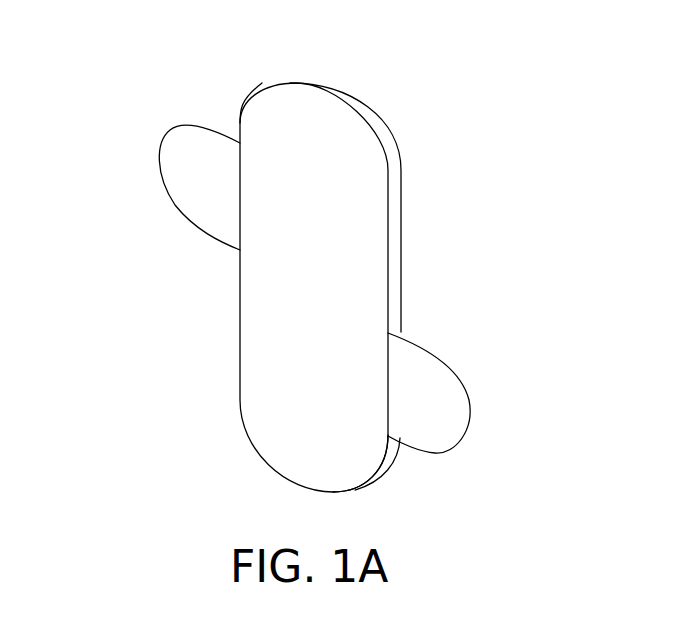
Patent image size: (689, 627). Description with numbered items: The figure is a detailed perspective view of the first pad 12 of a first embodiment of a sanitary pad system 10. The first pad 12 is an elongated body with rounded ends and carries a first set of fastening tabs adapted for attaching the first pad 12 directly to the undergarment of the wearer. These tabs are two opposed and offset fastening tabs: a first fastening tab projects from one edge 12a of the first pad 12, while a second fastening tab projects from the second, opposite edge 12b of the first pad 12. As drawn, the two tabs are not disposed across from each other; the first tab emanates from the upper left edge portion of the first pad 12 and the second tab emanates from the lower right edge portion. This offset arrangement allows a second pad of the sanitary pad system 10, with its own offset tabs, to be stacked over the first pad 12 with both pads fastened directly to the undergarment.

The sanitary pad system 10 is at (130, 108).
The first pad 12 is at (357, 250).
The one edge of the first pad 12a is at (243, 121).
The second, opposite edge of the first pad 12b is at (392, 448).